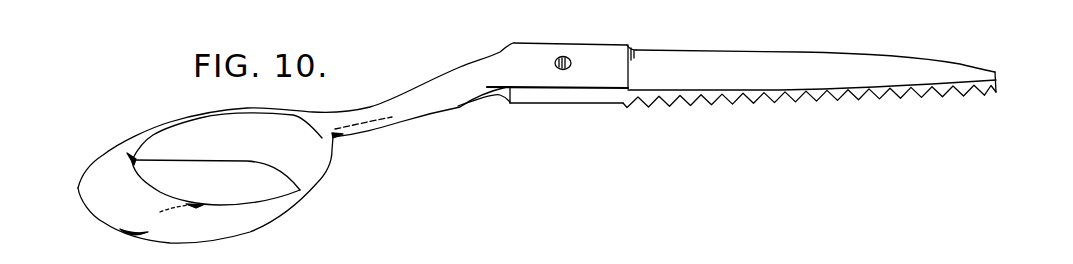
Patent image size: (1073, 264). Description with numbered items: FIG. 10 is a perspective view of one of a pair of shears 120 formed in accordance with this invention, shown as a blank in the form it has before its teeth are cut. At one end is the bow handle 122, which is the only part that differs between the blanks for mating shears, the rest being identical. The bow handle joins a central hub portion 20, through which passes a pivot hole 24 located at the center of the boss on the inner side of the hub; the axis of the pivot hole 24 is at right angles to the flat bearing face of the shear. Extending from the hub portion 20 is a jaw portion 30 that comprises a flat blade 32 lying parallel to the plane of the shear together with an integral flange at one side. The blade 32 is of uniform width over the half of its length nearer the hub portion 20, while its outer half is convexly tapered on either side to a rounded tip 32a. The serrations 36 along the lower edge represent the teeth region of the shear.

The shear 120 is at (352, 153).
The bow handle 122 is at (107, 166).
The central hub portion 20 is at (538, 100).
The pivot hole 24 is at (565, 59).
The jaw portion 30 is at (839, 76).
The flat blade 32 is at (841, 59).
The rounded tip 32a is at (997, 71).
The serrations 36 is at (923, 100).